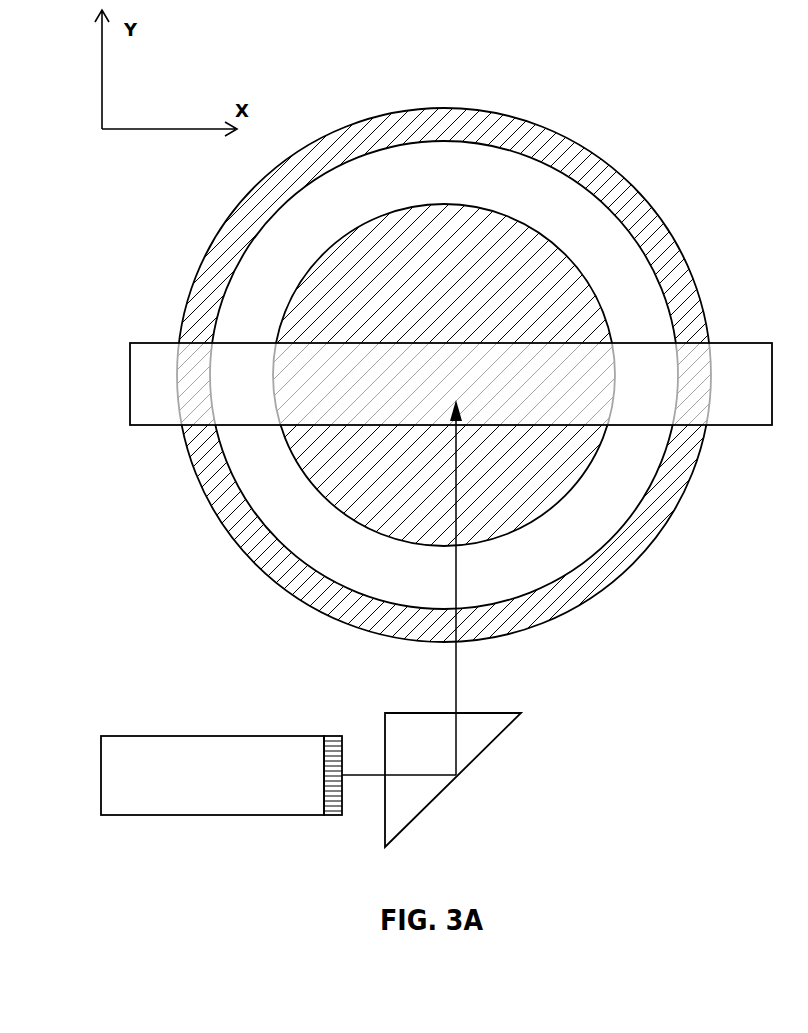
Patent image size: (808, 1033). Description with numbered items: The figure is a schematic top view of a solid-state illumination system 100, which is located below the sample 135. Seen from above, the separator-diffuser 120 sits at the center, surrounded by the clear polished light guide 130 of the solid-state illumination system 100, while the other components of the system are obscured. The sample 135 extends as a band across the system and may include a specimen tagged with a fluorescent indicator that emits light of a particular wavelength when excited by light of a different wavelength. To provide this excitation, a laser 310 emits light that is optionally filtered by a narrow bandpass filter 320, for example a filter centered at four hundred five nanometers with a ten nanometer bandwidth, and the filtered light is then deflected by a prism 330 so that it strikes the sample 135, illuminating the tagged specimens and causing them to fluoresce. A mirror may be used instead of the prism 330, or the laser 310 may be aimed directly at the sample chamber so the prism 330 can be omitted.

The solid-state illumination system 100 is at (433, 54).
The separator-diffuser 120 is at (397, 243).
The clear polished light guide 130 is at (208, 251).
The sample 135 is at (733, 351).
The laser 310 is at (172, 736).
The narrow bandpass filter 320 is at (336, 736).
The prism 330 is at (467, 765).